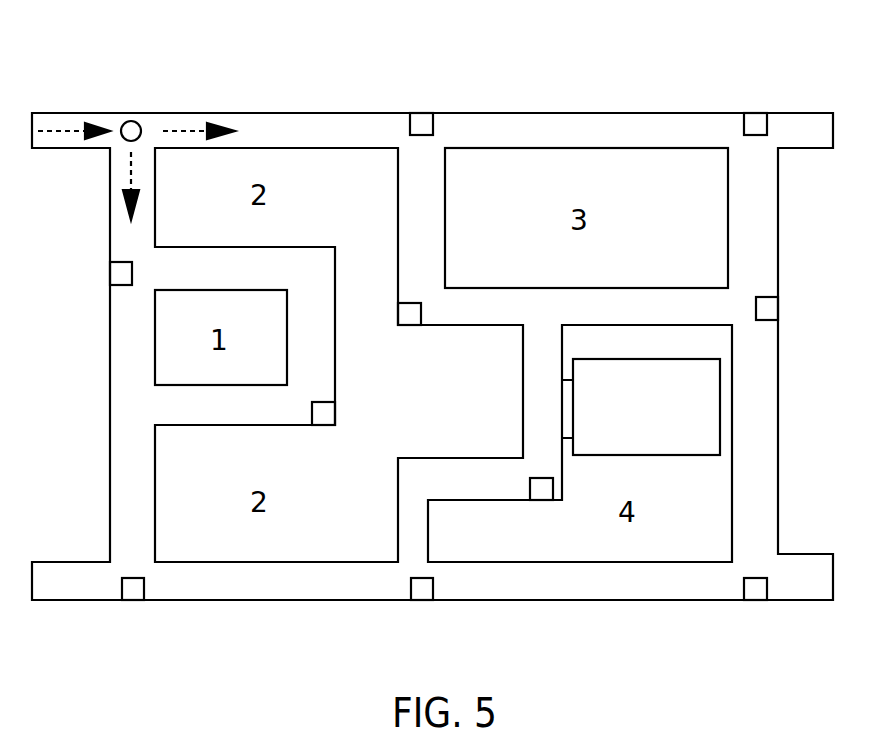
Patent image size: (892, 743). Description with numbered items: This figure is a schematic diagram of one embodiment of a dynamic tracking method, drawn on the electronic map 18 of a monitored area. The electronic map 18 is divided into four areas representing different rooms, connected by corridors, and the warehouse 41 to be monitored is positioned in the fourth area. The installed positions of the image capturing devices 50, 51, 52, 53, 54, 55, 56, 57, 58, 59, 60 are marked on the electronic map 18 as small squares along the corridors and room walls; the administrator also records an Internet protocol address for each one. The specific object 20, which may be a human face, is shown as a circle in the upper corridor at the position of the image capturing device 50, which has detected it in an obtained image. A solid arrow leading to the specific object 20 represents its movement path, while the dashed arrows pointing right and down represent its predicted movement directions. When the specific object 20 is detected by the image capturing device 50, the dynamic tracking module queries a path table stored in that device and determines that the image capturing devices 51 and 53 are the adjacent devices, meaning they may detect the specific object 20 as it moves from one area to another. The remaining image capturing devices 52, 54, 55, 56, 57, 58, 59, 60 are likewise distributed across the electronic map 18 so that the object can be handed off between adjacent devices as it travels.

The electronic map 18 is at (513, 113).
The specific object 20 is at (139, 124).
The warehouse 41 is at (702, 393).
The image capturing device 50 is at (136, 146).
The image capturing device 51 is at (420, 108).
The image capturing device 52 is at (756, 106).
The image capturing device 53 is at (101, 274).
The image capturing device 54 is at (344, 413).
The image capturing device 55 is at (386, 316).
The image capturing device 56 is at (789, 312).
The image capturing device 57 is at (541, 510).
The image capturing device 58 is at (133, 611).
The image capturing device 59 is at (424, 611).
The image capturing device 60 is at (754, 611).